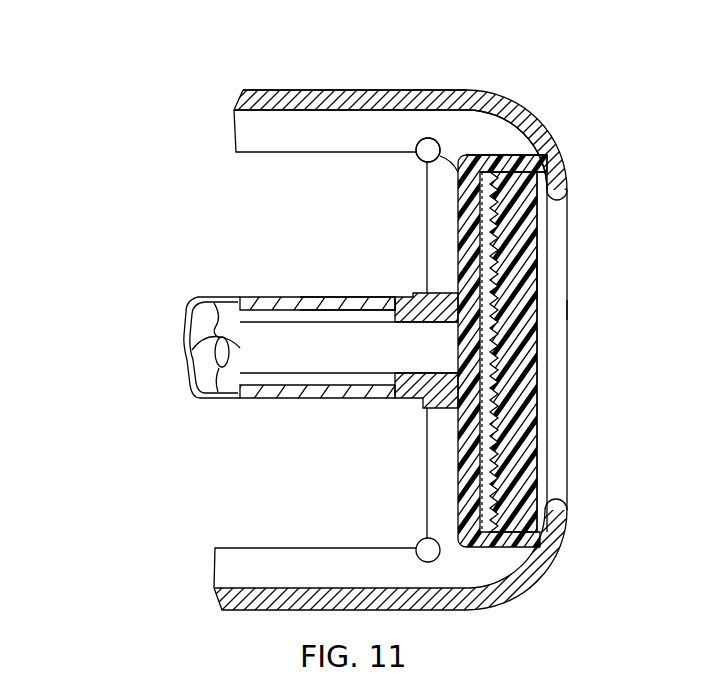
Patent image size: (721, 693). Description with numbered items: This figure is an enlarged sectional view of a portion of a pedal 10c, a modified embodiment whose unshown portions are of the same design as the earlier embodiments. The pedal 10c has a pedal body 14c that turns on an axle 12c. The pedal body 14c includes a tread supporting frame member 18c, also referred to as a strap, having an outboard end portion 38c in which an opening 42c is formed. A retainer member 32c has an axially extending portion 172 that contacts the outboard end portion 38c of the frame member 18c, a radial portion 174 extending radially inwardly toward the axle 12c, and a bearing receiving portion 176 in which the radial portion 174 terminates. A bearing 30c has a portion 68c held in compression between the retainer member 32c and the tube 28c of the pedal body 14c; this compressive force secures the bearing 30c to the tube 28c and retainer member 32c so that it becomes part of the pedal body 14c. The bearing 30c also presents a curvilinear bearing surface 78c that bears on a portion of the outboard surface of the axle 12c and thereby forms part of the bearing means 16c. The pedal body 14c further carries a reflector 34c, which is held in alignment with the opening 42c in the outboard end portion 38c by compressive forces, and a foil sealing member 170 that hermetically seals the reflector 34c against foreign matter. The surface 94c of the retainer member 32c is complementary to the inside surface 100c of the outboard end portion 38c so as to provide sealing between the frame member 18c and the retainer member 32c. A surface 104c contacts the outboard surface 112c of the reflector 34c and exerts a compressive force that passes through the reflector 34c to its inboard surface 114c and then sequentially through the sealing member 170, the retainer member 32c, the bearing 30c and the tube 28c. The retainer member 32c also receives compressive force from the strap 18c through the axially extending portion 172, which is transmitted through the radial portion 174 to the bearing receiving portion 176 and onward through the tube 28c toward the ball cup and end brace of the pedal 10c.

The pedal 10c is at (85, 215).
The axle 12c is at (192, 350).
The pedal body 14c is at (203, 77).
The bearing means 16c is at (405, 379).
The tread supporting frame member 18c is at (315, 88).
The tube 28c is at (262, 295).
The bearing 30c is at (418, 293).
The retainer member 32c is at (466, 194).
The reflector 34c is at (538, 272).
The outboard end portion 38c is at (499, 154).
The opening 42c is at (558, 203).
The compression portion of bearing 68c is at (422, 408).
The curvilinear bearing surface 78c is at (330, 297).
The surface of compression portion of retainer member 94c is at (560, 178).
The inside surface of outboard end portion 100c is at (543, 163).
The surface 104c is at (555, 495).
The outboard surface of reflector 112c is at (545, 325).
The inboard surface of reflector 114c is at (538, 462).
The foil sealing member 170 is at (538, 222).
The axially extending portion 172 is at (494, 154).
The radial portion 174 is at (420, 165).
The bearing receiving portion 176 is at (481, 245).